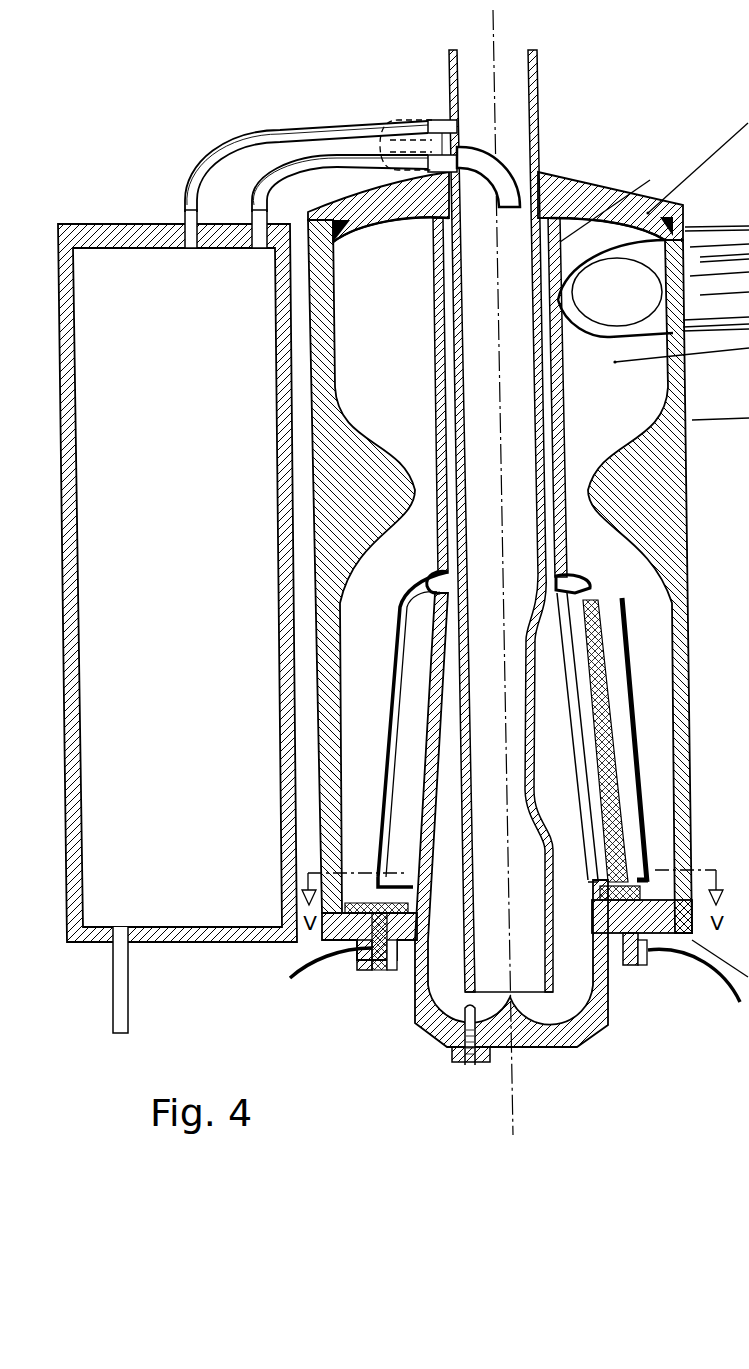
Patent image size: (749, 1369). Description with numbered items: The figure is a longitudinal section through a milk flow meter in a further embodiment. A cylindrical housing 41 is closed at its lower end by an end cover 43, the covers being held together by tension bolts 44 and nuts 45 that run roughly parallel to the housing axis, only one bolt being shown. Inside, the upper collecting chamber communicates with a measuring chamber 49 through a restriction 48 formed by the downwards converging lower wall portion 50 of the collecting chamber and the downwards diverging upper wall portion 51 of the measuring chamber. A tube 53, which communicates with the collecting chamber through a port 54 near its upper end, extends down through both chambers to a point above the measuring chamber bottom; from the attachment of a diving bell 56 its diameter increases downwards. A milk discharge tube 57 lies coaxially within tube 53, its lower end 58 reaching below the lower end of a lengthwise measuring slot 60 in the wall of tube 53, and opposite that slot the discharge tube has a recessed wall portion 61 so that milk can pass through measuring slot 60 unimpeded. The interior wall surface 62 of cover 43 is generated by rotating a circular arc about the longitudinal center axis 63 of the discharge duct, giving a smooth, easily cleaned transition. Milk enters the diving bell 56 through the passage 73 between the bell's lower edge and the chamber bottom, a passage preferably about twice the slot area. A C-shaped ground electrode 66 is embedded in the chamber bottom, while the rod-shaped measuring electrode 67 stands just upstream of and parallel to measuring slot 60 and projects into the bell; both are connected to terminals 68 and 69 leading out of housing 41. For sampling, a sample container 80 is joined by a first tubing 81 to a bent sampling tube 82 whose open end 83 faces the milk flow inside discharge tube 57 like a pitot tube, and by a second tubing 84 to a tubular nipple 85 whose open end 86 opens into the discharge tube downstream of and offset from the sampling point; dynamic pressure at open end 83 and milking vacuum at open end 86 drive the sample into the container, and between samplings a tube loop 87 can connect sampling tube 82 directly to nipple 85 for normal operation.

The cylindrical housing 41 is at (673, 380).
The end cover 43 is at (588, 1022).
The tension bolt 44 is at (470, 1062).
The nut 45 is at (452, 1052).
The restriction 48 is at (608, 488).
The measuring chamber 49 is at (635, 628).
The lower wall portion 50 is at (638, 447).
The upper wall portion 51 is at (615, 530).
The tube 53 is at (622, 180).
The port 54 is at (438, 240).
The diving bell 56 is at (638, 762).
The milk discharge tube 57 is at (553, 848).
The lower end of discharge tube 58 is at (551, 1018).
The measuring slot 60 is at (572, 717).
The recessed wall portion 61 is at (535, 640).
The interior wall surface 62 is at (552, 992).
The longitudinal center axis 63 is at (513, 1122).
The ground electrode 66 is at (375, 970).
The measuring electrode 67 is at (622, 797).
The terminal 68 is at (315, 967).
The terminal 69 is at (690, 960).
The passage 73 is at (648, 895).
The sample container 80 is at (137, 305).
The first tubing 81 is at (347, 175).
The sampling tube 82 is at (500, 182).
The open end of sampling tube 83 is at (558, 250).
The second tubing 84 is at (300, 152).
The tubular nipple 85 is at (445, 120).
The open end of nipple 86 is at (462, 127).
The tube loop 87 is at (383, 118).